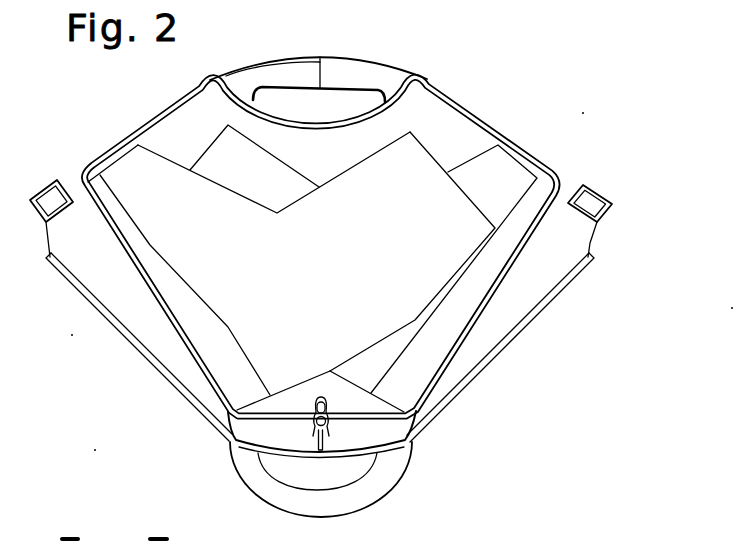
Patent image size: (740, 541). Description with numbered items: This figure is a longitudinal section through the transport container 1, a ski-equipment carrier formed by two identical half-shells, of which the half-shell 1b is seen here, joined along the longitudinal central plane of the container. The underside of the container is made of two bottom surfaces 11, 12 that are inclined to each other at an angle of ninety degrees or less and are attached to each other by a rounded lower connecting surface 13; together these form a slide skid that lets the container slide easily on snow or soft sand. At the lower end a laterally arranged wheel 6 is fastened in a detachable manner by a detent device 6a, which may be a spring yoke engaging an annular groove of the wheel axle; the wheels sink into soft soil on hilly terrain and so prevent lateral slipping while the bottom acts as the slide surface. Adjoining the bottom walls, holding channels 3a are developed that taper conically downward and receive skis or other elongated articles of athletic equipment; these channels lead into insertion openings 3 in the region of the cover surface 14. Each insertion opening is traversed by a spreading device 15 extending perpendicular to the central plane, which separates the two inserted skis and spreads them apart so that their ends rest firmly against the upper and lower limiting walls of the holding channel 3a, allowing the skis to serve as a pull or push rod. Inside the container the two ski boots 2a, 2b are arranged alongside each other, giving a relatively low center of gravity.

The transport container 1 is at (422, 57).
The half-shell 1b is at (488, 115).
The ski boot 2a is at (383, 266).
The ski boot 2b is at (253, 181).
The insertion opening 3 is at (72, 173).
The holding channel 3a is at (163, 343).
The wheel 6 is at (334, 503).
The detent device 6a is at (326, 395).
The bottom surface 11 is at (520, 332).
The bottom surface 12 is at (118, 335).
The connecting surface 13 is at (358, 459).
The cover surface 14 is at (153, 110).
The spreading device 15 is at (48, 195).